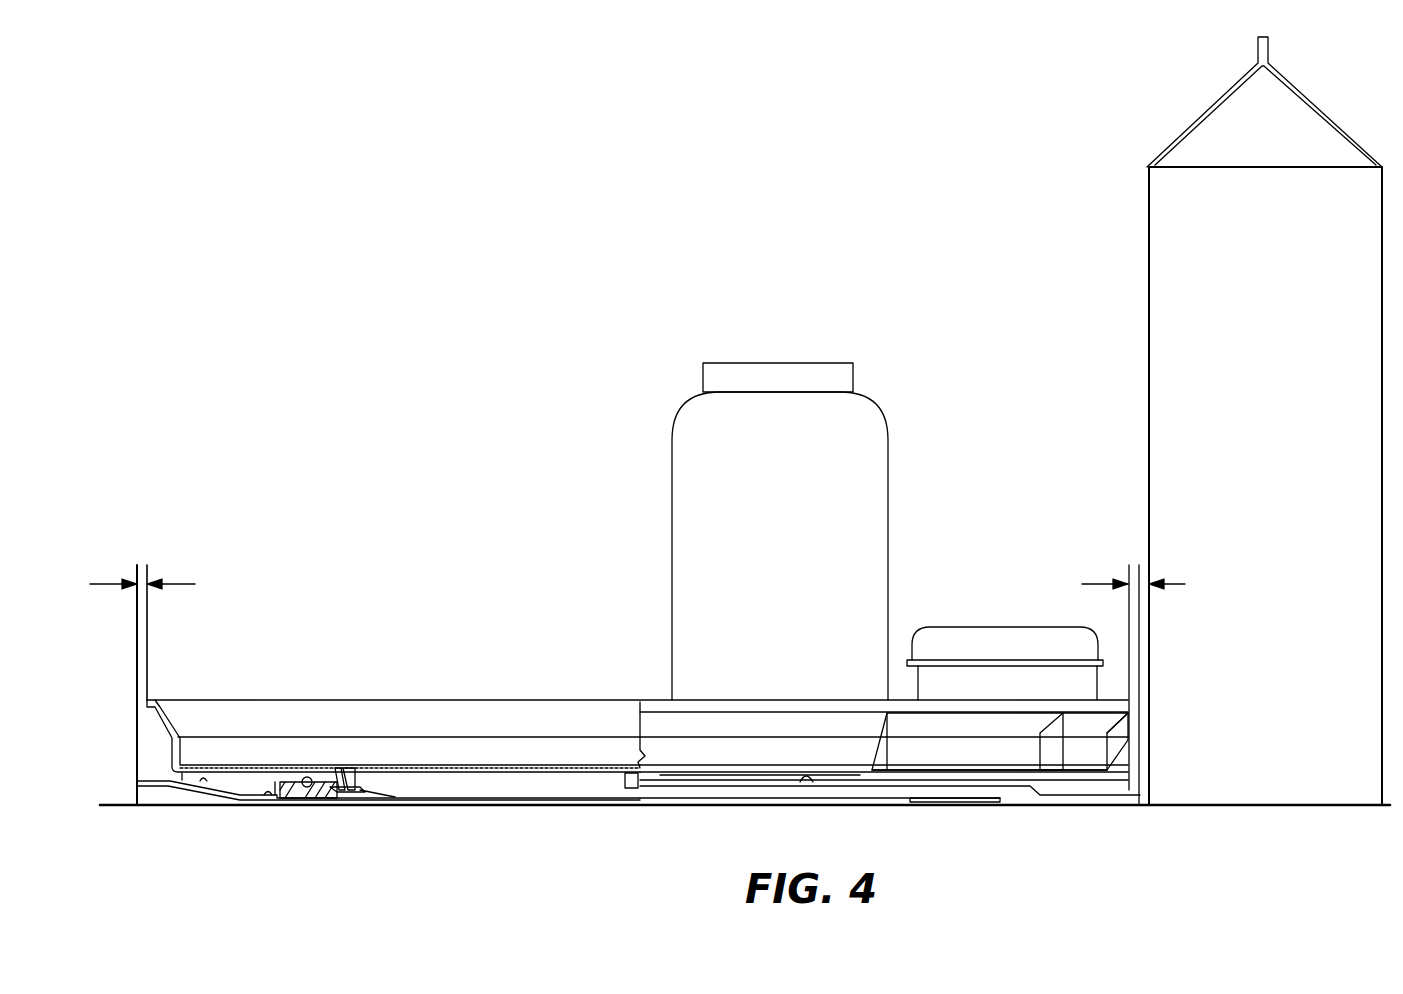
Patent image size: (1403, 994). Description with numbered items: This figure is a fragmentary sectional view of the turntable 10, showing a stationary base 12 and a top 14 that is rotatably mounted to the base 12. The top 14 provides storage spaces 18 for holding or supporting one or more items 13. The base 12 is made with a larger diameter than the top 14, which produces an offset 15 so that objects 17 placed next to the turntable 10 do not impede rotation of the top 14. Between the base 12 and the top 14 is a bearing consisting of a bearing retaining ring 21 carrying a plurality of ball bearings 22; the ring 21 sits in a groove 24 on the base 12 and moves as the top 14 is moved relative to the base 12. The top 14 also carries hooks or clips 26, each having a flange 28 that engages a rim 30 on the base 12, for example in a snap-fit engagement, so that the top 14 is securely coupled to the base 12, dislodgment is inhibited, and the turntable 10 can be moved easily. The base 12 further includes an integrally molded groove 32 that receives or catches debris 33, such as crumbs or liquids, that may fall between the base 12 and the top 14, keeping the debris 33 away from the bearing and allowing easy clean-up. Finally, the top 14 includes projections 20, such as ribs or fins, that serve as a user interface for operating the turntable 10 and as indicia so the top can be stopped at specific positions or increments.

The turntable 10 is at (226, 443).
The stationary base 12 is at (137, 790).
The items 13 is at (880, 407).
The top 14 is at (632, 702).
The offset 15 is at (653, 585).
The objects 17 is at (1149, 458).
The storage spaces 18 is at (392, 728).
The projections 20 is at (1052, 742).
The bearing retaining ring 21 is at (303, 800).
The ball bearings 22 is at (307, 777).
The groove 24 is at (338, 794).
The clips 26 is at (365, 778).
The flange 28 is at (374, 795).
The rim 30 is at (338, 767).
The groove 32 is at (211, 783).
The debris 33 is at (183, 775).